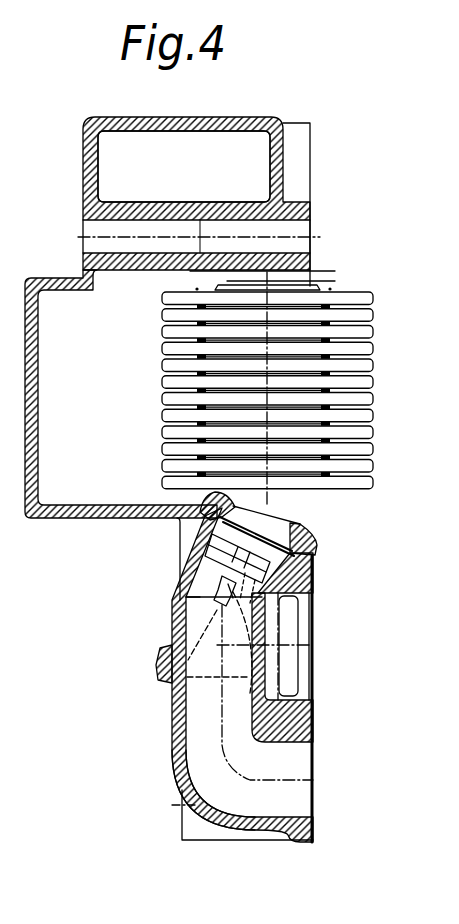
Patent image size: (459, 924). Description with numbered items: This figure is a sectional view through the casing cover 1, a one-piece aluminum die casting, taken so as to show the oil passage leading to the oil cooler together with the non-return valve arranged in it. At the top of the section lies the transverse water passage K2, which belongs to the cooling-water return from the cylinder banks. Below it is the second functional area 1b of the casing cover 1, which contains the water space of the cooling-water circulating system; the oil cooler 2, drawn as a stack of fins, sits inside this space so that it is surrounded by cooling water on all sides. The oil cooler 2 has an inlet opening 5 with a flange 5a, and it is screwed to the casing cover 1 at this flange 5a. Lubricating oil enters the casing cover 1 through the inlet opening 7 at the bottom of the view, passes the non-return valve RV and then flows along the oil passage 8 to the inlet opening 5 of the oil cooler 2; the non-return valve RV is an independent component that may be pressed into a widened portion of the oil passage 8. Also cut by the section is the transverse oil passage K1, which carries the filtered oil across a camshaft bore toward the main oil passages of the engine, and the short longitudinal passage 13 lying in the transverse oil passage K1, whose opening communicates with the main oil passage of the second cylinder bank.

The casing cover 1 is at (250, 118).
The transverse water passage K2 is at (118, 150).
The second functional area 1b is at (137, 400).
The oil cooler 2 is at (350, 330).
The inlet opening 5 is at (235, 536).
The flange 5a is at (303, 560).
The non-return valve RV is at (183, 594).
The longitudinal passage 13 is at (317, 635).
The transverse oil passage K1 is at (283, 633).
The oil passage 8 is at (213, 725).
The inlet opening 7 is at (314, 767).